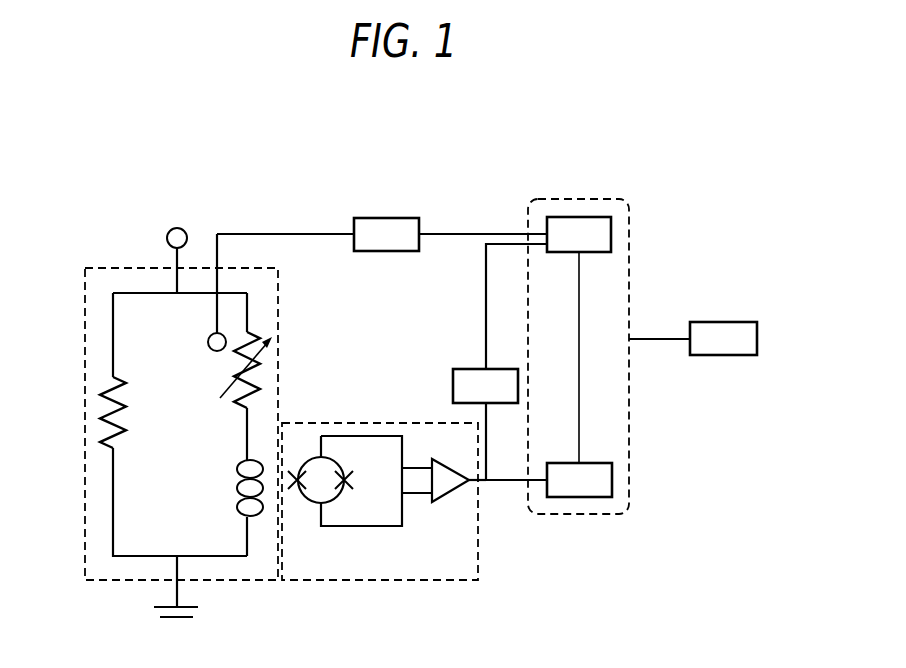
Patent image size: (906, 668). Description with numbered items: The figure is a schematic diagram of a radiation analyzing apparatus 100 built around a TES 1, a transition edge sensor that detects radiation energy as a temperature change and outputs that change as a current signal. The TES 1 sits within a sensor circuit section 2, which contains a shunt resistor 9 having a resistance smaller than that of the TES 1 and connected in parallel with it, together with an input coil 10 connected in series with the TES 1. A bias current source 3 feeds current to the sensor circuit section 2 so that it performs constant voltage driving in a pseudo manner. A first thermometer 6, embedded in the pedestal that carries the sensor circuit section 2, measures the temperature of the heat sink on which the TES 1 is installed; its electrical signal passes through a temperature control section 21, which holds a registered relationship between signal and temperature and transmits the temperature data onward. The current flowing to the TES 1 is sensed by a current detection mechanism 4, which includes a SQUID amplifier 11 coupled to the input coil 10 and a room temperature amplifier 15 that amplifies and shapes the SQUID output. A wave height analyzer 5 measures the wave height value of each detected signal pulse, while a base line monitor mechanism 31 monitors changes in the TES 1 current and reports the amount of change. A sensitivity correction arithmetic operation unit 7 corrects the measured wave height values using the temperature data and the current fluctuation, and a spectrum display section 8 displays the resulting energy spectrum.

The radiation analyzing apparatus 100 is at (683, 165).
The TES 1 is at (254, 378).
The sensor circuit section 2 is at (86, 267).
The bias current source 3 is at (178, 229).
The current detection mechanism 4 is at (384, 461).
The wave height analyzer 5 is at (578, 498).
The first thermometer 6 is at (207, 342).
The sensitivity correction arithmetic operation unit 7 is at (580, 216).
The spectrum display section 8 is at (718, 321).
The shunt resistor 9 is at (124, 426).
The input coil 10 is at (240, 470).
The SQUID amplifier 11 is at (312, 504).
The room temperature amplifier 15 is at (443, 498).
The temperature control section 21 is at (388, 217).
The base line monitor mechanism 31 is at (470, 368).